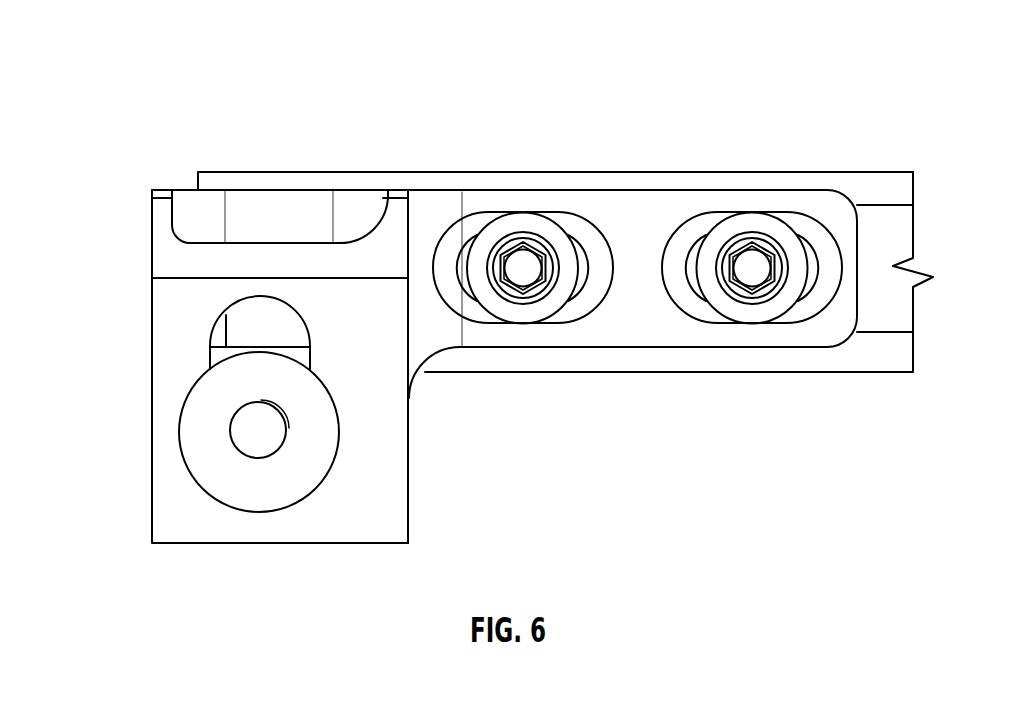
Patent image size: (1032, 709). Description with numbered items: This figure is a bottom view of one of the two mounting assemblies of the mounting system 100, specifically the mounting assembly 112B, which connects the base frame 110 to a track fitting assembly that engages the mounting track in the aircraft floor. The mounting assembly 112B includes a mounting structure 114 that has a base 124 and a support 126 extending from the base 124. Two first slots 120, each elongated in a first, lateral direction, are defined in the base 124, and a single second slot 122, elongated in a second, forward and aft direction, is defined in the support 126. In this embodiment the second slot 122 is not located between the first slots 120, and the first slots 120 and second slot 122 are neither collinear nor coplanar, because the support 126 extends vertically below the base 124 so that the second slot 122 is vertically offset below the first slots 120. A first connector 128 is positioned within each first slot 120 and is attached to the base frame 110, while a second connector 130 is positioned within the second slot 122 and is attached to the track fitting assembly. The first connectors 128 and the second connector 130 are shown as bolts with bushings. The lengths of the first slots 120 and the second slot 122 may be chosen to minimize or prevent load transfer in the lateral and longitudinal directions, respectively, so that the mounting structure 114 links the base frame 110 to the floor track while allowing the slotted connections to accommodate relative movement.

The mounting system 100 is at (318, 123).
The base frame 110 is at (857, 368).
The mounting assembly 112B is at (167, 531).
The mounting structure 114 is at (397, 479).
The first slot 120 is at (588, 268).
The second slot 122 is at (213, 335).
The base 124 is at (476, 212).
The support 126 is at (378, 511).
The first connector 128 is at (537, 302).
The second connector 130 is at (275, 500).